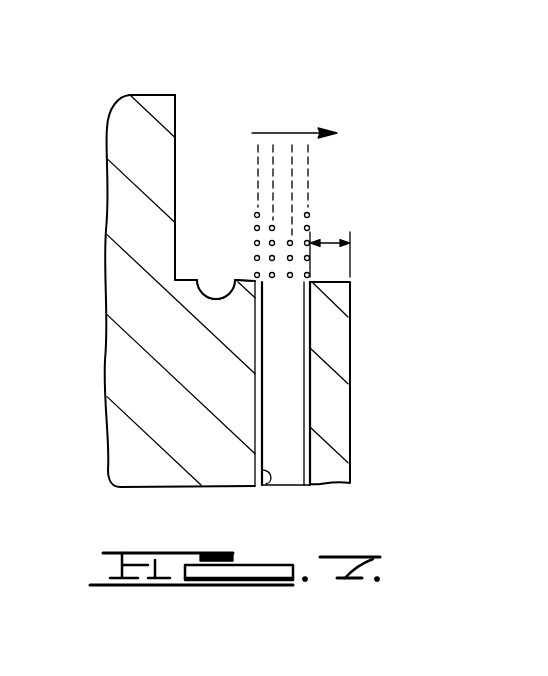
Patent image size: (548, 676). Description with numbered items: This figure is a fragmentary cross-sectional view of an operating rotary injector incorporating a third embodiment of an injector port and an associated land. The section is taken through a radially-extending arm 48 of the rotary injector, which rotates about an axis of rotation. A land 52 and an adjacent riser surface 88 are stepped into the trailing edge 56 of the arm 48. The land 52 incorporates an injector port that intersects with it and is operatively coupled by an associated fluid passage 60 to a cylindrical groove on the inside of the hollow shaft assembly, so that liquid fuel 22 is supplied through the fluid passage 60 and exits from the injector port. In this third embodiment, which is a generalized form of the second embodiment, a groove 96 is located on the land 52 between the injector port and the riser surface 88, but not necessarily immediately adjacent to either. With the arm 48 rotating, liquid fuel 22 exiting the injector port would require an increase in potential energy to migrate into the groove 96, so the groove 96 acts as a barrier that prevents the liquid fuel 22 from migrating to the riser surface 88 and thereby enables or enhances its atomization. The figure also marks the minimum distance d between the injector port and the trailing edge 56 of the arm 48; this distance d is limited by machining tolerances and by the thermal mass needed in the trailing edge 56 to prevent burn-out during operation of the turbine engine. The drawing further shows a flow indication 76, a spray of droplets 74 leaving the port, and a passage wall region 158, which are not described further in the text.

The radially-extending arm 48 is at (105, 267).
The riser surface 88 is at (176, 108).
The groove 96 is at (207, 282).
The land 52 is at (237, 278).
The passage 158 is at (315, 272).
The trailing edge 56 is at (352, 358).
The flow direction 76 is at (280, 132).
The droplets 74 is at (315, 203).
The minimum distance d is at (330, 242).
The liquid fuel 22 is at (268, 487).
The fluid passage 60 is at (292, 485).